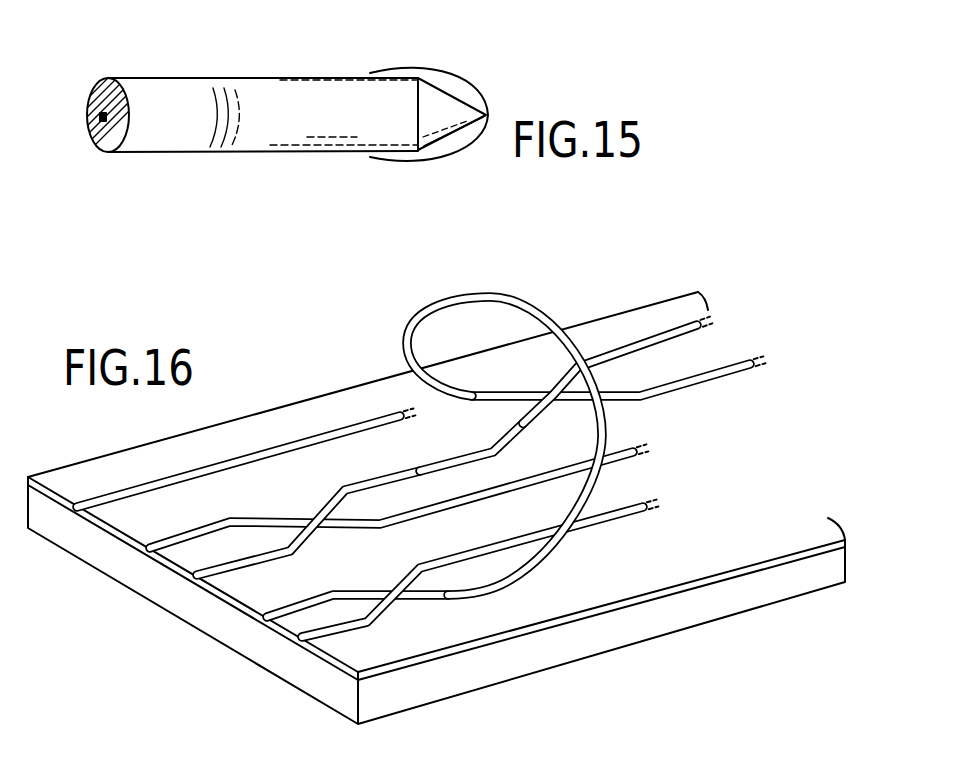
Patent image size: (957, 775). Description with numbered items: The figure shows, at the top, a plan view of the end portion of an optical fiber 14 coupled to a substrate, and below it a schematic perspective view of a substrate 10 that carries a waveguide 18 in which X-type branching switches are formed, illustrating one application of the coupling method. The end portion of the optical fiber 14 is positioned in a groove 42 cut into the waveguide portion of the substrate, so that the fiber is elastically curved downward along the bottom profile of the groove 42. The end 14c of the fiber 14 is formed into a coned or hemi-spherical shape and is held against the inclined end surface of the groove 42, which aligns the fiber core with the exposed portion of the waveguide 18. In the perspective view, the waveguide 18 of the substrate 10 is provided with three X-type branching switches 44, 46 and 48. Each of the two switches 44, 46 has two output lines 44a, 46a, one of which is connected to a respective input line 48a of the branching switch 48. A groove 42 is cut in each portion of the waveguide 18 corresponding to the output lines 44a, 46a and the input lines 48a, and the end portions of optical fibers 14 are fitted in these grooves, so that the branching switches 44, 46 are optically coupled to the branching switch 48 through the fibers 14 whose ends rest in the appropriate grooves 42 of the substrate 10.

In FIG. 16, the substrate 10 is at (727, 613).
In FIG. 16, the waveguide 18 is at (603, 612).
In FIG. 15, the optical fiber 14 is at (192, 78).
In FIG. 16, the optical fiber 14 is at (601, 478).
In FIG. 15, the end of the fiber 14c is at (453, 140).
In FIG. 15, the groove 42 is at (451, 77).
In FIG. 16, the X-type branching switch 44 is at (404, 609).
In FIG. 16, the output line 44a is at (489, 589).
In FIG. 16, the X-type branching switch 46 is at (312, 520).
In FIG. 16, the output line 46a is at (377, 483).
In FIG. 16, the X-type branching switch 48 is at (550, 384).
In FIG. 16, the input line 48a is at (500, 392).